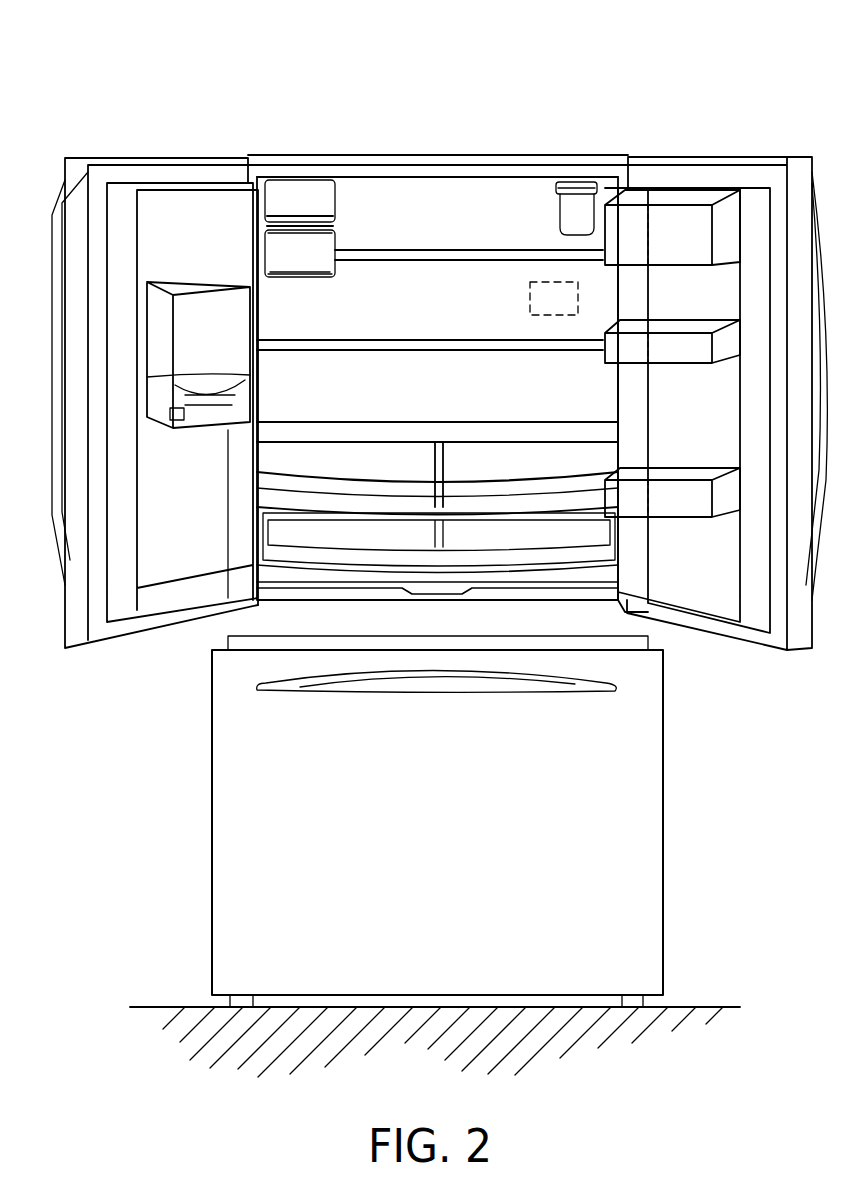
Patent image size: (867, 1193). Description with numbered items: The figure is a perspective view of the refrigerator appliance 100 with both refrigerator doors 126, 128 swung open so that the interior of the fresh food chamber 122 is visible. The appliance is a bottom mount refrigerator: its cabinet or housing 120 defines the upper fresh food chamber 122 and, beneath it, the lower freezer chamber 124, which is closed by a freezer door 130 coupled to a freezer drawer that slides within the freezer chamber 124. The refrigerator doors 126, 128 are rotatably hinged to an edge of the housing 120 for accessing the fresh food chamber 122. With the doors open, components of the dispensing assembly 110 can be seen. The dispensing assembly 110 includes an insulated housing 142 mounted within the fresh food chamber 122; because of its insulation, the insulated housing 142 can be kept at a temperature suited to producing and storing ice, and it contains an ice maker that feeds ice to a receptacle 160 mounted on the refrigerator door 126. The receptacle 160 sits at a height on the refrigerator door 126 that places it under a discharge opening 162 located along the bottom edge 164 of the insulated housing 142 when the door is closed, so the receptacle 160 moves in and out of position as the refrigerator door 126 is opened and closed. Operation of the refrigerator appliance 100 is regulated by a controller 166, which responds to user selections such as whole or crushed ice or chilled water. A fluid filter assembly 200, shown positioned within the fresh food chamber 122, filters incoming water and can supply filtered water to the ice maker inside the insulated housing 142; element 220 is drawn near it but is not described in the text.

The refrigerator appliance 100 is at (692, 86).
The dispensing assembly 110 is at (246, 228).
The housing 120 is at (212, 898).
The fresh food chamber 122 is at (430, 206).
The freezer chamber 124 is at (625, 767).
The refrigerator door 126 is at (118, 157).
The refrigerator door 128 is at (708, 156).
The freezer door 130 is at (625, 872).
The insulated housing 142 is at (300, 204).
The receptacle 160 is at (197, 312).
The discharge opening 162 is at (299, 281).
The bottom edge 164 is at (293, 282).
The controller 166 is at (528, 300).
The fluid filter assembly 200 is at (552, 211).
The sensor 220 is at (574, 212).